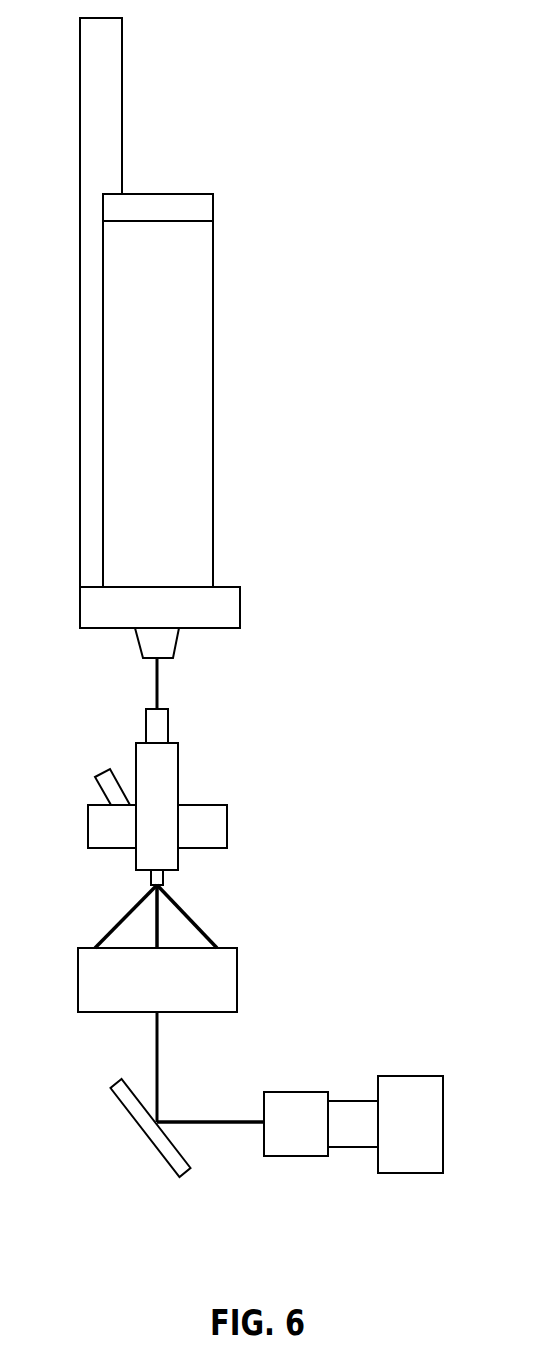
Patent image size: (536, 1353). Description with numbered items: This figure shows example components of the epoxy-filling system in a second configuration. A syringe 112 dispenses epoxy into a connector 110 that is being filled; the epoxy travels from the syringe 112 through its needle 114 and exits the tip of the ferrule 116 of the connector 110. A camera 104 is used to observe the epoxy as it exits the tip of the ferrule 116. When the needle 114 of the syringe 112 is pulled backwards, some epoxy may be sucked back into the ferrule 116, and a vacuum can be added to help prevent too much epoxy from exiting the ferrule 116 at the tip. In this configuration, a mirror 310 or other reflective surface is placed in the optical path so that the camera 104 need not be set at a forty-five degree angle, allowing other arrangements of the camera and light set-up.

The syringe 112 is at (188, 340).
The needle 114 is at (157, 688).
The connector 110 is at (178, 765).
The ferrule 116 is at (163, 880).
The camera 104 is at (302, 1092).
The mirror 310 is at (160, 1143).